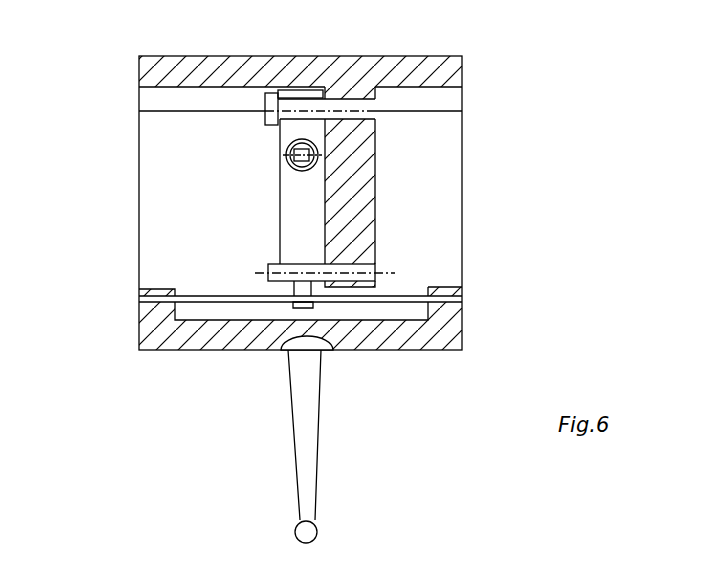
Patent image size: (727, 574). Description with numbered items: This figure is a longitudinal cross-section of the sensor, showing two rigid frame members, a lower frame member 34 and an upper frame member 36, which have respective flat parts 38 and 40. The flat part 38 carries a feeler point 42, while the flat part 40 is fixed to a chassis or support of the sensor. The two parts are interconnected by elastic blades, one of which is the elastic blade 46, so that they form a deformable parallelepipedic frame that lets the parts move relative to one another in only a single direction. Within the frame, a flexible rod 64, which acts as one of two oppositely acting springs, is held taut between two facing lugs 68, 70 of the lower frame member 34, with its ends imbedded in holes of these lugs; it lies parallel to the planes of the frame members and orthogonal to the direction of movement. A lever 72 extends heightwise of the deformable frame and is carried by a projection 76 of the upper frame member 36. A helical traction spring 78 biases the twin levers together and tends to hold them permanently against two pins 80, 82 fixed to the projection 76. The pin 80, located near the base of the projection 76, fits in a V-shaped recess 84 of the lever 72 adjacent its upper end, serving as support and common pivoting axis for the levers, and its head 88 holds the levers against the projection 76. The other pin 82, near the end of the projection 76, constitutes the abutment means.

The lower frame member 34 is at (399, 345).
The upper frame member 36 is at (395, 70).
The flat part 38 is at (217, 337).
The flat part 40 is at (163, 67).
The feeler point 42 is at (307, 465).
The elastic blade 46 is at (450, 97).
The flexible rod 64 is at (408, 294).
The lug 68 is at (443, 315).
The lug 70 is at (148, 313).
The lever 72 is at (288, 213).
The projection 76 is at (357, 177).
The helical traction spring 78 is at (290, 165).
The pin 80 is at (347, 107).
The pin 82 is at (277, 273).
The V-shaped recess 84 is at (292, 91).
The head 88 is at (265, 123).